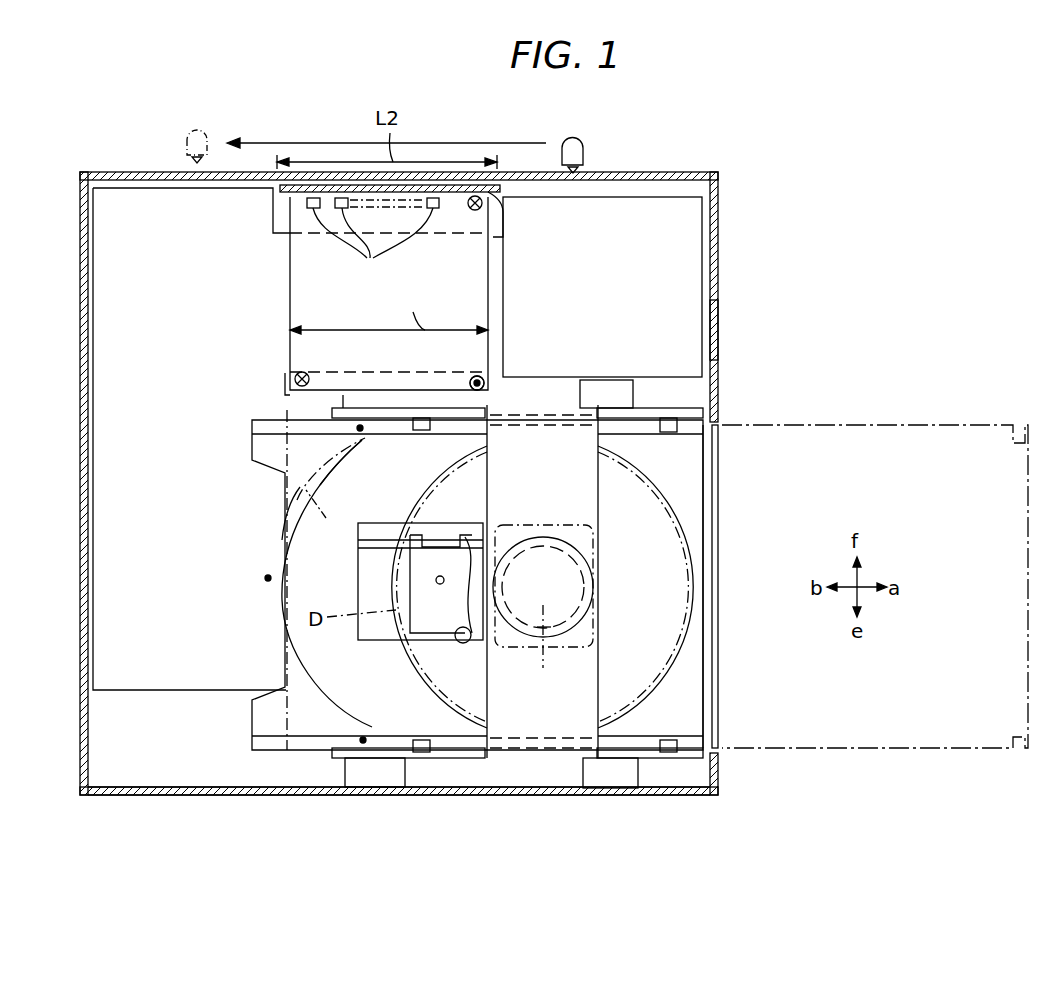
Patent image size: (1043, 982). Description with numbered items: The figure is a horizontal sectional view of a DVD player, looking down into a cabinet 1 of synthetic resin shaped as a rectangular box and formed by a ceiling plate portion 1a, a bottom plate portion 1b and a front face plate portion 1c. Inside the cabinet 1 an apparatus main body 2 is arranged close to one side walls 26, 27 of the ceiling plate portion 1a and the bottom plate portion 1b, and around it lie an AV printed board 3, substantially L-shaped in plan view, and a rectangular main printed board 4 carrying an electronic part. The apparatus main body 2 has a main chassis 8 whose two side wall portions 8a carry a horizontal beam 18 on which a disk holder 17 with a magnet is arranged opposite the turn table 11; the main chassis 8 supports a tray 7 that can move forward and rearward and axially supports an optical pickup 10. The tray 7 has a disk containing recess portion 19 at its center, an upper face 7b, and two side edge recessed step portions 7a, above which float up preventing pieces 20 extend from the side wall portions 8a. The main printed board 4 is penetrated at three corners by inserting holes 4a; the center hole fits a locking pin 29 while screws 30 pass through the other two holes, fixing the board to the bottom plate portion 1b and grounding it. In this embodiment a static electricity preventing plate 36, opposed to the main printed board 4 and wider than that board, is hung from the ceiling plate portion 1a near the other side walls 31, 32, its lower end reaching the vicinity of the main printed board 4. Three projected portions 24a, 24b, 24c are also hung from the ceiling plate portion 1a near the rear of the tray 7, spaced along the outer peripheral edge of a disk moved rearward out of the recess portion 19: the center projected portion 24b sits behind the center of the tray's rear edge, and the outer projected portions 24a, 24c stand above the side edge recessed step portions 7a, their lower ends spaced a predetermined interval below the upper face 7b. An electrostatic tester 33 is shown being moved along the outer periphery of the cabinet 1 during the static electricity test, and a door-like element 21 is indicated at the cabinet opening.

The cabinet 1 is at (431, 536).
The ceiling plate portion 1a is at (399, 826).
The bottom plate portion 1b is at (163, 801).
The front face plate portion 1c is at (720, 331).
The apparatus main body 2 is at (439, 573).
The AV printed board 3 is at (677, 270).
The main printed board 4 is at (404, 298).
The inserting hole 4a is at (474, 378).
The tray 7 is at (865, 603).
The side edge recessed step portion 7a is at (380, 433).
The upper face of the tray 7b is at (300, 487).
The main chassis 8 is at (522, 592).
The side wall portion 8a is at (648, 412).
The optical pickup 10 is at (440, 622).
The turn table 11 is at (542, 651).
The disk holder 17 is at (542, 538).
The horizontal beam 18 is at (577, 510).
The disk containing recess portion 19 is at (416, 668).
The float up preventing piece 20 is at (421, 432).
The door opening edge 21 is at (722, 423).
The projected portion 24a is at (358, 430).
The projected portion 24b is at (265, 577).
The projected portion 24c is at (363, 740).
The side wall 26 is at (399, 819).
The side wall 27 is at (298, 797).
The locking pin 29 is at (484, 384).
The screw 30 is at (472, 212).
The side wall 31 is at (520, 169).
The side wall 32 is at (390, 188).
The electrostatic tester 33 is at (583, 152).
The static electricity preventing plate 36 is at (503, 218).